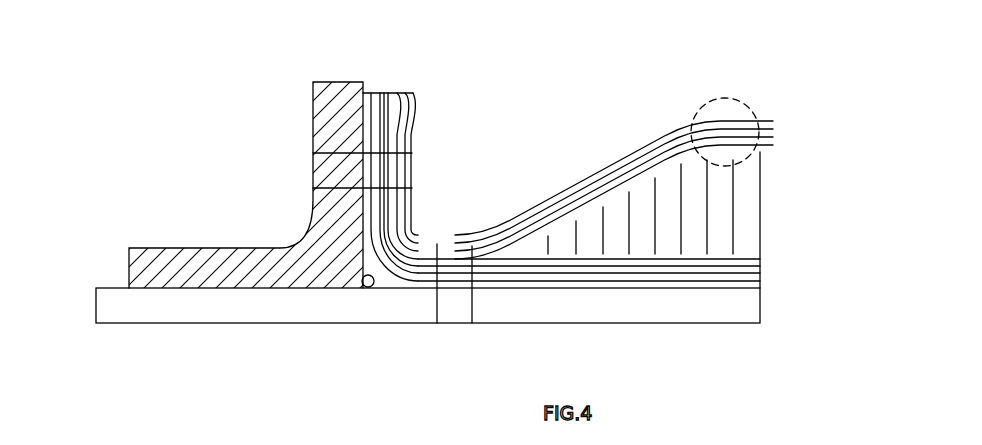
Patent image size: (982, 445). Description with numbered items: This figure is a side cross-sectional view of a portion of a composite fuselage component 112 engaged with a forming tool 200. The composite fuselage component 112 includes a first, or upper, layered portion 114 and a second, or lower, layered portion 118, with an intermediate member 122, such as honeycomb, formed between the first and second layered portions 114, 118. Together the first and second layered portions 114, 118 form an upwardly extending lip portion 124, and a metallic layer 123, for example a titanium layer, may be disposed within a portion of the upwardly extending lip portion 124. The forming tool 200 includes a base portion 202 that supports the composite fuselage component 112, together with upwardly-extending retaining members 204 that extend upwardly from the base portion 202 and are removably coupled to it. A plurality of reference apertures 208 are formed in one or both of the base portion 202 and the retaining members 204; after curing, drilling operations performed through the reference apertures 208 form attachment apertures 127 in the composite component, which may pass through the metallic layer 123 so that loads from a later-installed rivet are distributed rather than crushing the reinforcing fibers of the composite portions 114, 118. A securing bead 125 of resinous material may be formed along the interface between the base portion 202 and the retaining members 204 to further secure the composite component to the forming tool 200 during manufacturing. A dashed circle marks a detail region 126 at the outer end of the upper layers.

The forming tool 200 is at (193, 90).
The base portion 202 is at (163, 324).
The retaining members 204 is at (247, 260).
The reference apertures 208 is at (318, 164).
The metallic layer 123 is at (386, 98).
The upwardly extending lip portion 124 is at (393, 82).
The attachment apertures 127 is at (449, 250).
The second layered portion 118 is at (658, 298).
The composite fuselage component 112 is at (614, 143).
The first layered portion 114 is at (585, 160).
The intermediate member 122 is at (762, 200).
The detail region 126 is at (752, 96).
The securing bead 125 is at (361, 291).